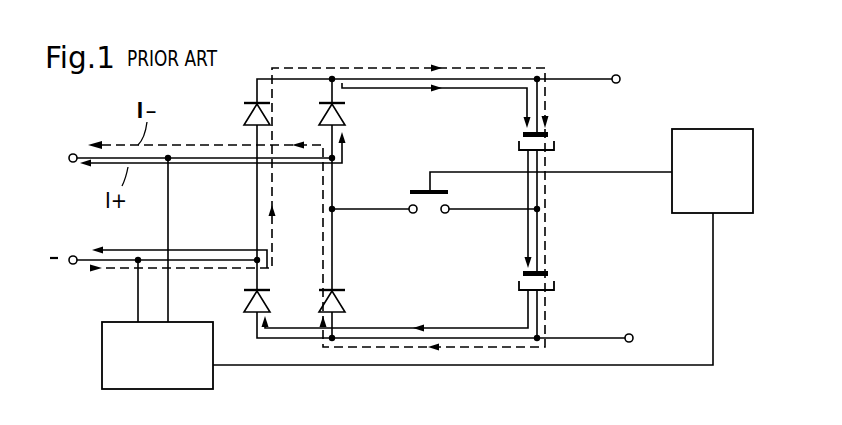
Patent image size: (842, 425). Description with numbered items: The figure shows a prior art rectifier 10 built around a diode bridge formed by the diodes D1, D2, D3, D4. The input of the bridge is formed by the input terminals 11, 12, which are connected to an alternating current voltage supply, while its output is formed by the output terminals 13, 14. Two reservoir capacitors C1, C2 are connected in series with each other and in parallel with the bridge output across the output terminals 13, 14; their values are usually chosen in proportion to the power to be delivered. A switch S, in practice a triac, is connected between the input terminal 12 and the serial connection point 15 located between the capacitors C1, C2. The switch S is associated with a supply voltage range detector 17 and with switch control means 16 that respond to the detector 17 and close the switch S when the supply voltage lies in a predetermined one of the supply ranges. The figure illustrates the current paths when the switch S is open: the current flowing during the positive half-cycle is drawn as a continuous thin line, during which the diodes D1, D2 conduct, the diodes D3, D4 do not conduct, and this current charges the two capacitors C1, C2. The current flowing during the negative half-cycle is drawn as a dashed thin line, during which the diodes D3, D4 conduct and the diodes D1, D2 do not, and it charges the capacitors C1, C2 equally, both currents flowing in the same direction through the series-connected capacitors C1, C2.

The rectifier 10 is at (500, 46).
The input terminal 11 is at (68, 264).
The input terminal 12 is at (68, 163).
The output terminal 13 is at (620, 79).
The output terminal 14 is at (633, 338).
The serial connection point 15 is at (541, 209).
The switch control means 16 is at (745, 143).
The supply voltage range detector 17 is at (202, 378).
The diode D1 is at (346, 117).
The diode D2 is at (244, 302).
The diode D3 is at (241, 113).
The diode D4 is at (346, 304).
The reservoir capacitor C1 is at (555, 146).
The reservoir capacitor C2 is at (555, 286).
The switch S is at (429, 219).